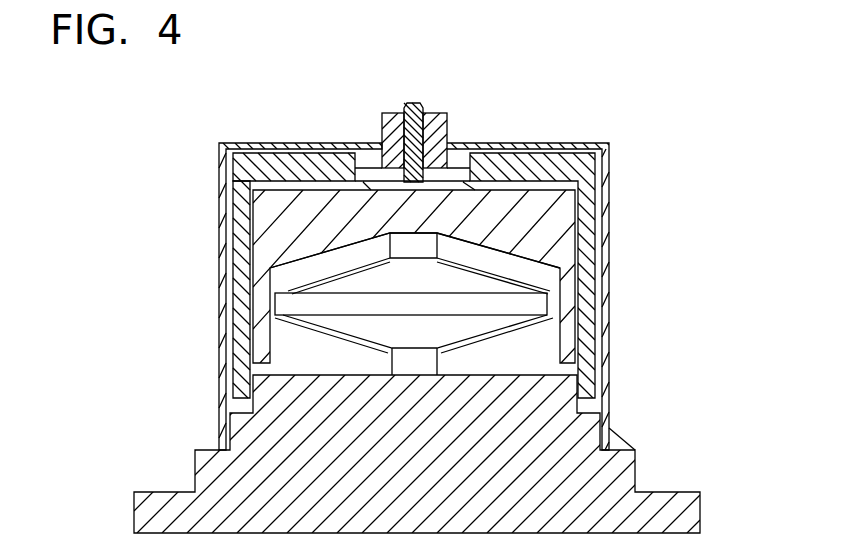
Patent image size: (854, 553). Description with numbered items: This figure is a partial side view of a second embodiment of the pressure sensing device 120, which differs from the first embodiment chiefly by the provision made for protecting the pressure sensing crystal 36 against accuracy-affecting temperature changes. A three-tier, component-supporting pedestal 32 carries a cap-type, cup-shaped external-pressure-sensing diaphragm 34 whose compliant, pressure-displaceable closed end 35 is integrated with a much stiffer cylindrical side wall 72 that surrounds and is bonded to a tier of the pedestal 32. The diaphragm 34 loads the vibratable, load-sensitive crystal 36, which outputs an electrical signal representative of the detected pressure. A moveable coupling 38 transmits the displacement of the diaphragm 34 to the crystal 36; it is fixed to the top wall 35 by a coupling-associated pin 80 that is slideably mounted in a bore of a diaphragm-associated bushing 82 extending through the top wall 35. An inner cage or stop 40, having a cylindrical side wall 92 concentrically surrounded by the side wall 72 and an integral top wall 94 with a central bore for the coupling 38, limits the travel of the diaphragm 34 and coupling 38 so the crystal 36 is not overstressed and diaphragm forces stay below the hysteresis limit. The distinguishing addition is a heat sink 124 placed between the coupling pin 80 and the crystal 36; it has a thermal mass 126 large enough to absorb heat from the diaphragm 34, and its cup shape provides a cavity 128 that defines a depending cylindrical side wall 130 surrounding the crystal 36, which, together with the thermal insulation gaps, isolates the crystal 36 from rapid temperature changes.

The pressure sensing device 120 is at (122, 178).
The pedestal 32 is at (187, 444).
The closed end 35 is at (586, 145).
The inner cage or stop 40 is at (217, 264).
The external-pressure-sensing diaphragm 34 is at (627, 272).
The cylindrical side wall 72 is at (607, 364).
The top wall 94 is at (248, 153).
The cylindrical side wall 92 is at (245, 337).
The heat sink 124 is at (596, 223).
The moveable coupling 38 is at (373, 183).
The coupling-associated pin 80 is at (415, 103).
The diaphragm-associated bushing 82 is at (444, 118).
The thermal mass 126 is at (270, 235).
The sensing crystal 36 is at (463, 348).
The cavity 128 is at (563, 330).
The cylindrical side wall 130 is at (270, 306).